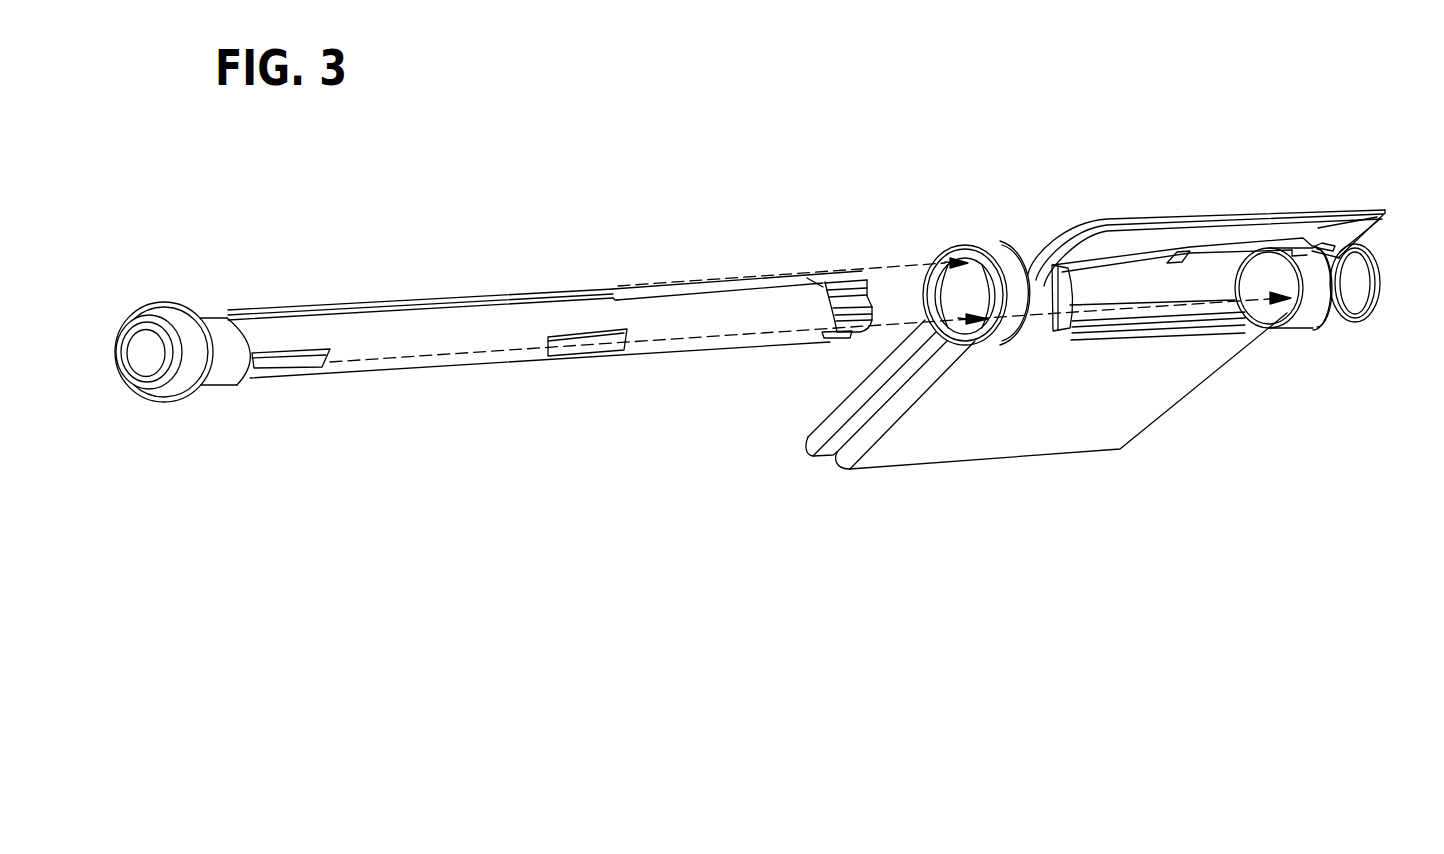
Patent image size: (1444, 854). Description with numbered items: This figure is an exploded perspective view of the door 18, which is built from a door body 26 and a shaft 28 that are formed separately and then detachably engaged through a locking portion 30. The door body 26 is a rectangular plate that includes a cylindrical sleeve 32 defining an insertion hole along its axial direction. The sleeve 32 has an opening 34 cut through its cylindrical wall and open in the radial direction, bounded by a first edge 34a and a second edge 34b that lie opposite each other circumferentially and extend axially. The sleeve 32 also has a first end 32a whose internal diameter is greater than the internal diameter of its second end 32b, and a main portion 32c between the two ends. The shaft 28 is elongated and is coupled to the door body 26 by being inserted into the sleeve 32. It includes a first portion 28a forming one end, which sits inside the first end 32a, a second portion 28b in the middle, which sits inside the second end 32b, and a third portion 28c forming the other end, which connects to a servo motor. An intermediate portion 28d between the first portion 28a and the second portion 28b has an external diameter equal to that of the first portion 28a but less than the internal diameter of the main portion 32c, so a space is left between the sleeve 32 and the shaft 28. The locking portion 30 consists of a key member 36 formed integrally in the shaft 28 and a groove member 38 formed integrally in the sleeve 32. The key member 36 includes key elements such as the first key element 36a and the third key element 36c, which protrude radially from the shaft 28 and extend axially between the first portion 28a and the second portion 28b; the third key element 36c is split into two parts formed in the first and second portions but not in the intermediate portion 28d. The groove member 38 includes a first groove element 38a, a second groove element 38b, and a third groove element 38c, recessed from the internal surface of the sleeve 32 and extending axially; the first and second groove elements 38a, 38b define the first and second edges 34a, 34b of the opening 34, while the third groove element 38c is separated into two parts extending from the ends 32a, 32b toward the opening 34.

The door 18 is at (1125, 363).
The door body 26 is at (963, 444).
The shaft 28 is at (699, 340).
The first portion 28a is at (275, 335).
The second portion 28b is at (578, 312).
The third portion 28c is at (843, 323).
The intermediate portion 28d is at (416, 324).
The locking portion 30 is at (650, 287).
The sleeve 32 is at (1125, 345).
The first end 32a is at (921, 312).
The second end 32b is at (1355, 268).
The main portion 32c is at (1210, 282).
The opening 34 is at (1206, 312).
The first edge 34a is at (1158, 272).
The second edge 34b is at (1177, 318).
The key member 36 is at (474, 305).
The first key element 36a is at (360, 305).
The third key element 36c is at (566, 345).
The groove member 38 is at (911, 258).
The first groove element 38a is at (983, 212).
The second groove element 38b is at (930, 305).
The third groove element 38c is at (1003, 250).